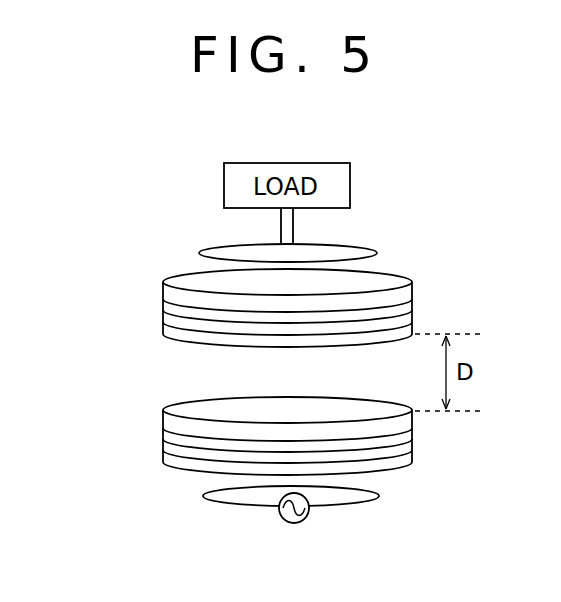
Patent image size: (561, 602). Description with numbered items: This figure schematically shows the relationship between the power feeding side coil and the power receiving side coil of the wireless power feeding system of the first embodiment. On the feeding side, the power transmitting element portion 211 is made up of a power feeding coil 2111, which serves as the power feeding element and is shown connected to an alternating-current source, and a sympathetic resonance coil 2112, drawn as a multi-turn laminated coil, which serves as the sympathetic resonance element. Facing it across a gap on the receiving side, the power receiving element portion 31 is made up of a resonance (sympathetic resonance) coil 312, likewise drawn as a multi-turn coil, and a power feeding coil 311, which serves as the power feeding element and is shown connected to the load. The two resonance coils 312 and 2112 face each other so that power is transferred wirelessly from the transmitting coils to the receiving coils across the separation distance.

The power receiving element portion 31 is at (270, 274).
The power feeding coil 311 is at (203, 251).
The resonance (sympathetic resonance) coil 312 is at (162, 327).
The power transmitting element portion 211 is at (264, 479).
The sympathetic resonance coil 2112 is at (163, 433).
The power feeding coil 2111 is at (213, 502).